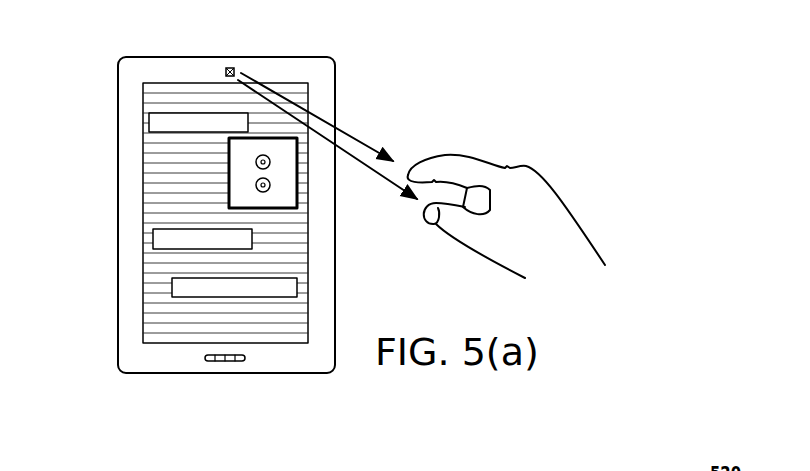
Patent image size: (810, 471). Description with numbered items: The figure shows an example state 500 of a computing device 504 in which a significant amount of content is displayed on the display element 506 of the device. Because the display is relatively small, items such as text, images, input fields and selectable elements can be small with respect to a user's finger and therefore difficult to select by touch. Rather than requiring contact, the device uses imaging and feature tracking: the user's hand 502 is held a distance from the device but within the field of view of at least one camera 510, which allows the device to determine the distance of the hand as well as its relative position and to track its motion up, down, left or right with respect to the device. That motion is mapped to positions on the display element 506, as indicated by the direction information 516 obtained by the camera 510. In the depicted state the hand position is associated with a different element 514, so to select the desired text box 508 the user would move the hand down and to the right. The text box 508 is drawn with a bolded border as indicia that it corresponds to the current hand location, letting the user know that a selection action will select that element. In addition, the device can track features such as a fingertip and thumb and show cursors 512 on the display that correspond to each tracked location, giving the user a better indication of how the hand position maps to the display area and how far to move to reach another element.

The state 500 is at (688, 119).
The user's hand 502 is at (610, 257).
The computing device 504 is at (116, 180).
The display element 506 is at (141, 218).
The text box 508 is at (298, 192).
The camera 510 is at (226, 68).
The cursors 512 is at (243, 187).
The different element 514 is at (172, 112).
The direction information 516 is at (390, 128).